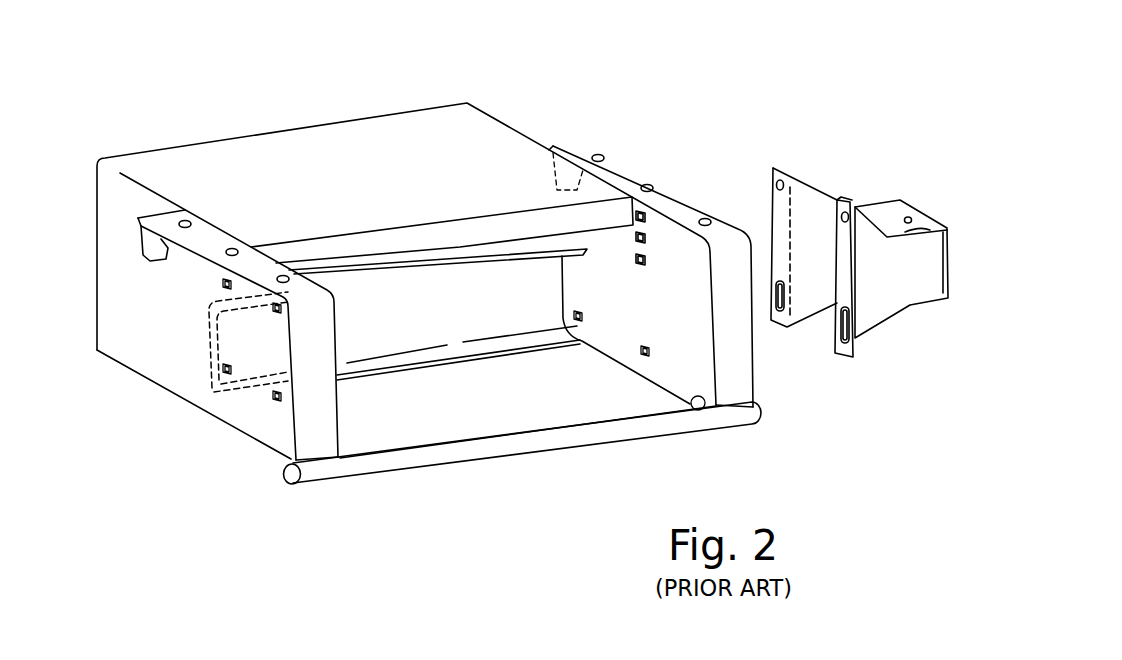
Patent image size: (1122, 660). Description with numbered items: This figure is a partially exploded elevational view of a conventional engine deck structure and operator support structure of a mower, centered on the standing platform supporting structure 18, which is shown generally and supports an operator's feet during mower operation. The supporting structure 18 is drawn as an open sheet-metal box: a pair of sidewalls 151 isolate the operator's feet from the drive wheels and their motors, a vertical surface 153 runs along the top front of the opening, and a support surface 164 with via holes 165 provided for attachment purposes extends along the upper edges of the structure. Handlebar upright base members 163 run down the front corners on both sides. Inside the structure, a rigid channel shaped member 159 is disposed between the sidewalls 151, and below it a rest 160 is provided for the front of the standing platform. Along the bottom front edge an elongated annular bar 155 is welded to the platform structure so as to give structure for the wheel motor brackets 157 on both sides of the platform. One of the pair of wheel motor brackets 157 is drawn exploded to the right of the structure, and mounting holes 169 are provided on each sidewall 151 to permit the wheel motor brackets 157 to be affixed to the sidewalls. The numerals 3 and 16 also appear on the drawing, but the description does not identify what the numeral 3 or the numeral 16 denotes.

The chassis 3 is at (423, 122).
The rod 16 is at (433, 413).
The standing platform supporting structure 18 is at (574, 405).
The sidewalls 151 is at (253, 347).
The vertical surface 153 is at (516, 232).
The elongated annular bar 155 is at (515, 448).
The wheel motor brackets 157 is at (883, 307).
The rigid channel shaped member 159 is at (533, 273).
The rest 160 is at (467, 350).
The handlebar upright base members 163 is at (331, 425).
The support surface 164 is at (211, 232).
The via holes 165 is at (182, 218).
The mounting holes 169 is at (655, 274).